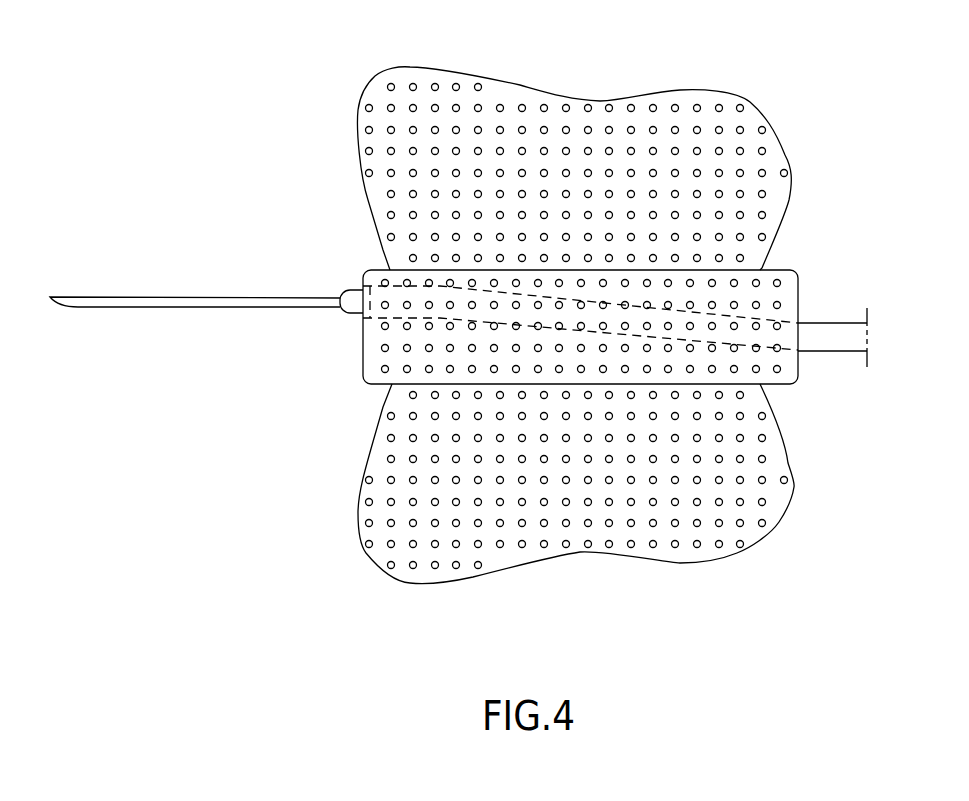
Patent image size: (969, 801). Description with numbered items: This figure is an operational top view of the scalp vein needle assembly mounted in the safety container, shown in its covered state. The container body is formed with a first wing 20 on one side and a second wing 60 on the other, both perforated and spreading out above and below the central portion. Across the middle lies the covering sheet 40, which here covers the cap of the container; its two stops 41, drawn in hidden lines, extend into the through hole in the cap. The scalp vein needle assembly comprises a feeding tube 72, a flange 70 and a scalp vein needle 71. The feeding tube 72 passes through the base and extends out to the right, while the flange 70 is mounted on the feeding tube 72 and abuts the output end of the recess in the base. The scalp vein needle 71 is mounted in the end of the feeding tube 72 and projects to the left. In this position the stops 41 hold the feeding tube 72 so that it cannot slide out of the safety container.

The first wing 20 is at (720, 548).
The covering sheet 40 is at (380, 272).
The stops 41 is at (395, 322).
The second wing 60 is at (429, 92).
The flange 70 is at (345, 303).
The scalp vein needle 71 is at (293, 298).
The feeding tube 72 is at (848, 330).